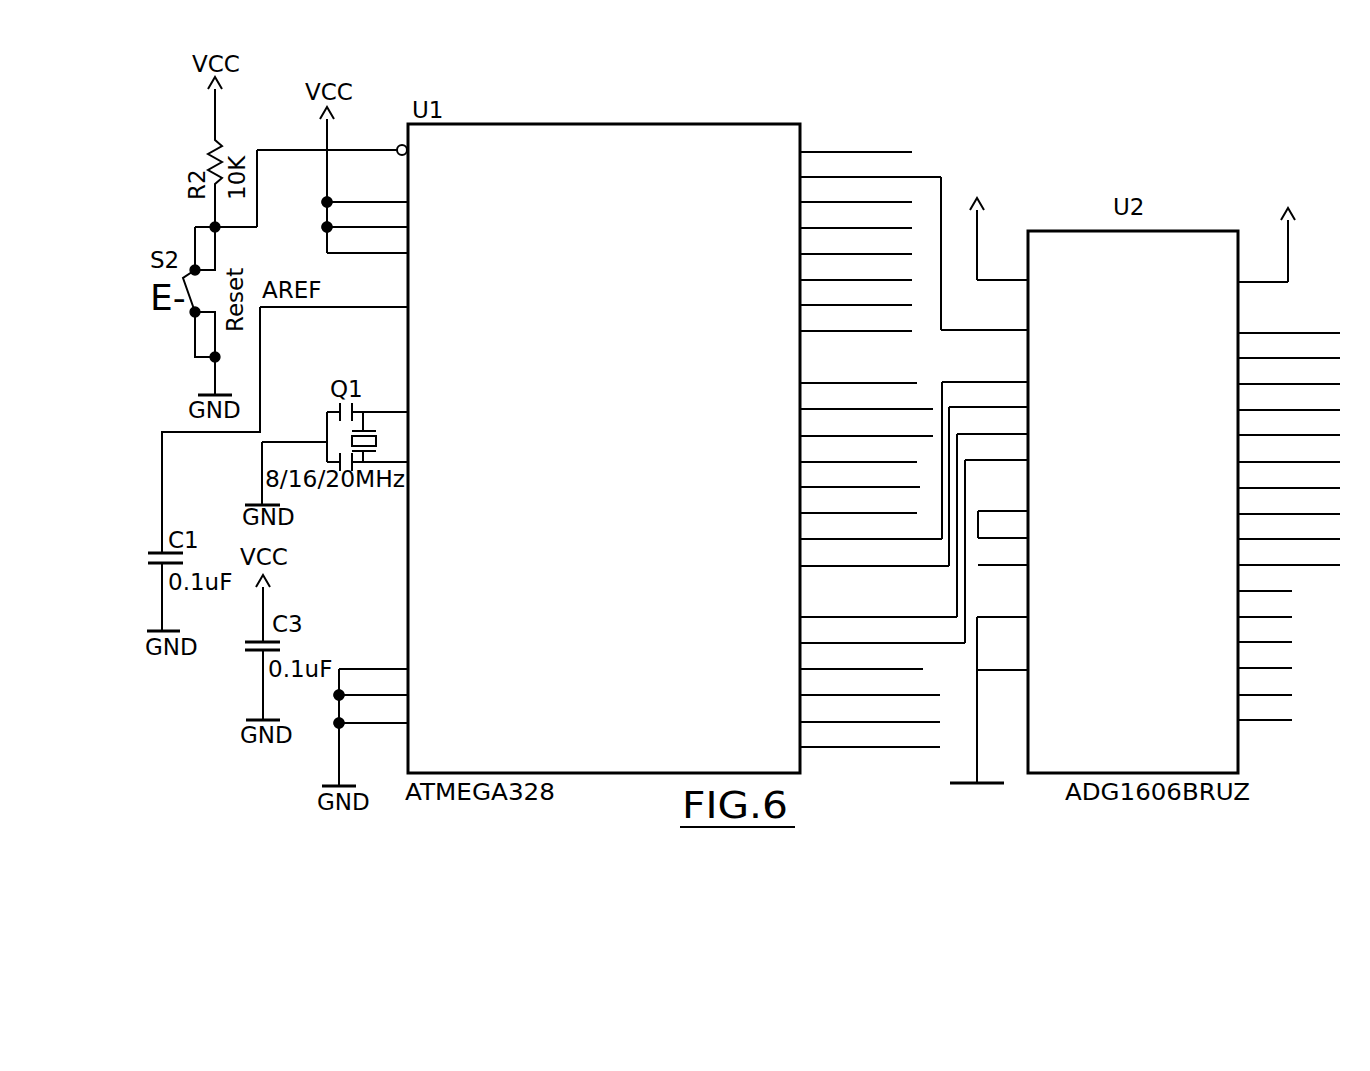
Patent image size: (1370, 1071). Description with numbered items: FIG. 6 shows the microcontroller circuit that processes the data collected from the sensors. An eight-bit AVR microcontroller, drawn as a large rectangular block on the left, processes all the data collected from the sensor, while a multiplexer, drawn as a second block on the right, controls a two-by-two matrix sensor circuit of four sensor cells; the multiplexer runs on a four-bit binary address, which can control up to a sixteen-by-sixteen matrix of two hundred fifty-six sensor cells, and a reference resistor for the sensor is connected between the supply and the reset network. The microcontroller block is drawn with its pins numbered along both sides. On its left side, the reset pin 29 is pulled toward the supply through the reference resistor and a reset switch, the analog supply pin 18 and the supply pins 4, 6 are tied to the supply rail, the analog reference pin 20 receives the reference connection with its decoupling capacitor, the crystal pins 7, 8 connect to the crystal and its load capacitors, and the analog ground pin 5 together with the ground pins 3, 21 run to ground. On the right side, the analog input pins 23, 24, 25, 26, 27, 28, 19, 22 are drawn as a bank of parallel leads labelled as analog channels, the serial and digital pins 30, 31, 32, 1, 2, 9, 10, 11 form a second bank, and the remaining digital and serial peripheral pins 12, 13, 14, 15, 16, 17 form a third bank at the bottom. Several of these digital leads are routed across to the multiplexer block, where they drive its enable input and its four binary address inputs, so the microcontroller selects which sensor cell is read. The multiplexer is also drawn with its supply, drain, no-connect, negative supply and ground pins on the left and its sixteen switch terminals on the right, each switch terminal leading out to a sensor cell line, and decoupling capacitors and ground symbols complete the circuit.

The U1 pin 1 PD3(INT1)/D3; U2 pin 1 VDD 1 is at (882, 322).
The U1 pin 2 PD4(XCK/T0)/D4; U2 pin 2 NC_ 2 is at (872, 499).
The U1 pin 3 GND; U2 pin 3 NC_ 3 is at (714, 608).
The U1 pin 4 VCC; U2 pin 4 S16 4 is at (807, 470).
The U1 pin 5 AGND; U2 pin 5 S15 5 is at (815, 678).
The U1 pin 6 VCC; U2 pin 6 S14 6 is at (809, 456).
The U1 pin 7 PB6(XTAL1/TOSC1); U2 pin 7 S13 7 is at (822, 523).
The U1 pin 8 PB7(XTAL2/TOSC2); U2 pin 8 S12 8 is at (822, 534).
The U1 pin 9 PD5(T1)/D5; U2 pin 9 S11 9 is at (997, 548).
The U1 pin 10 PD6(AIN0)/D6; U2 pin 10 S10/X9 10 is at (1008, 548).
The U1 pin 11 PD7(AIN1)/D7; U2 pin 11 S9/X8 11 is at (1008, 545).
The U1 pin 12 PB0(ICP)/D8; U2 pin 12 GND 12 is at (889, 637).
The U1 pin 13 PB1(OC1A)/D9; U2 pin 13 NC 13 is at (865, 595).
The U1 pin 14 PB2(SS/OC1B)/D10; U2 pin 14 A3 14 is at (845, 556).
The U1 pin 15 PB3(MOSI/OC2)/MOSI; U2 pin 15 A2 15 is at (838, 556).
The U1 pin 16 PB4(MISO)/MISO; U2 pin 16 A1 16 is at (866, 556).
The U1 pin 17 PB5(SCK)/SCK; U2 pin 17 A0 17 is at (873, 556).
The U1 pin 18 AVCC; U2 pin 18 EN 18 is at (695, 260).
The U1 pin 19 ADC6/A6; U2 pin 19 S1/X0 19 is at (1035, 312).
The U1 pin 20 AREF; U2 pin 20 S2/X1 20 is at (800, 325).
The U1 pin 21 GND; U2 pin 21 S3/X2 21 is at (837, 546).
The U1 pin 22 ADC7/A7; U2 pin 22 S4/X3 22 is at (1035, 365).
The U1 pin 23 PC0(ADC0)/A0; U2 pin 23 S5/X4 23 is at (1004, 289).
The U1 pin 24 PC1(ADC1)/A1; U2 pin 24 S6/X5 24 is at (1004, 314).
The U1 pin 25 PC2(ADC2)/A2; U2 pin 25 S7/X6 25 is at (1004, 339).
The U1 pin 26 PC3(ADC3)/A3; U2 pin 26 S8/X7 26 is at (1004, 366).
The U1 pin 27 PC4(ADC4/SDA)/A4; U2 pin 27 VSS 27 is at (835, 520).
The U1 pin 28 PC5(ADC5/SCL)/A5; U2 pin 28 D 28 is at (946, 237).
The U1 pin 29 PC6(/RESET) reset input 29 is at (415, 174).
The U1 pin 30 PD0(RXD)/RXI 30 is at (799, 375).
The U1 pin 31 PD1(TXD)/TXO 31 is at (808, 401).
The U1 pin 32 PD2(INT0)/D2 32 is at (805, 428).